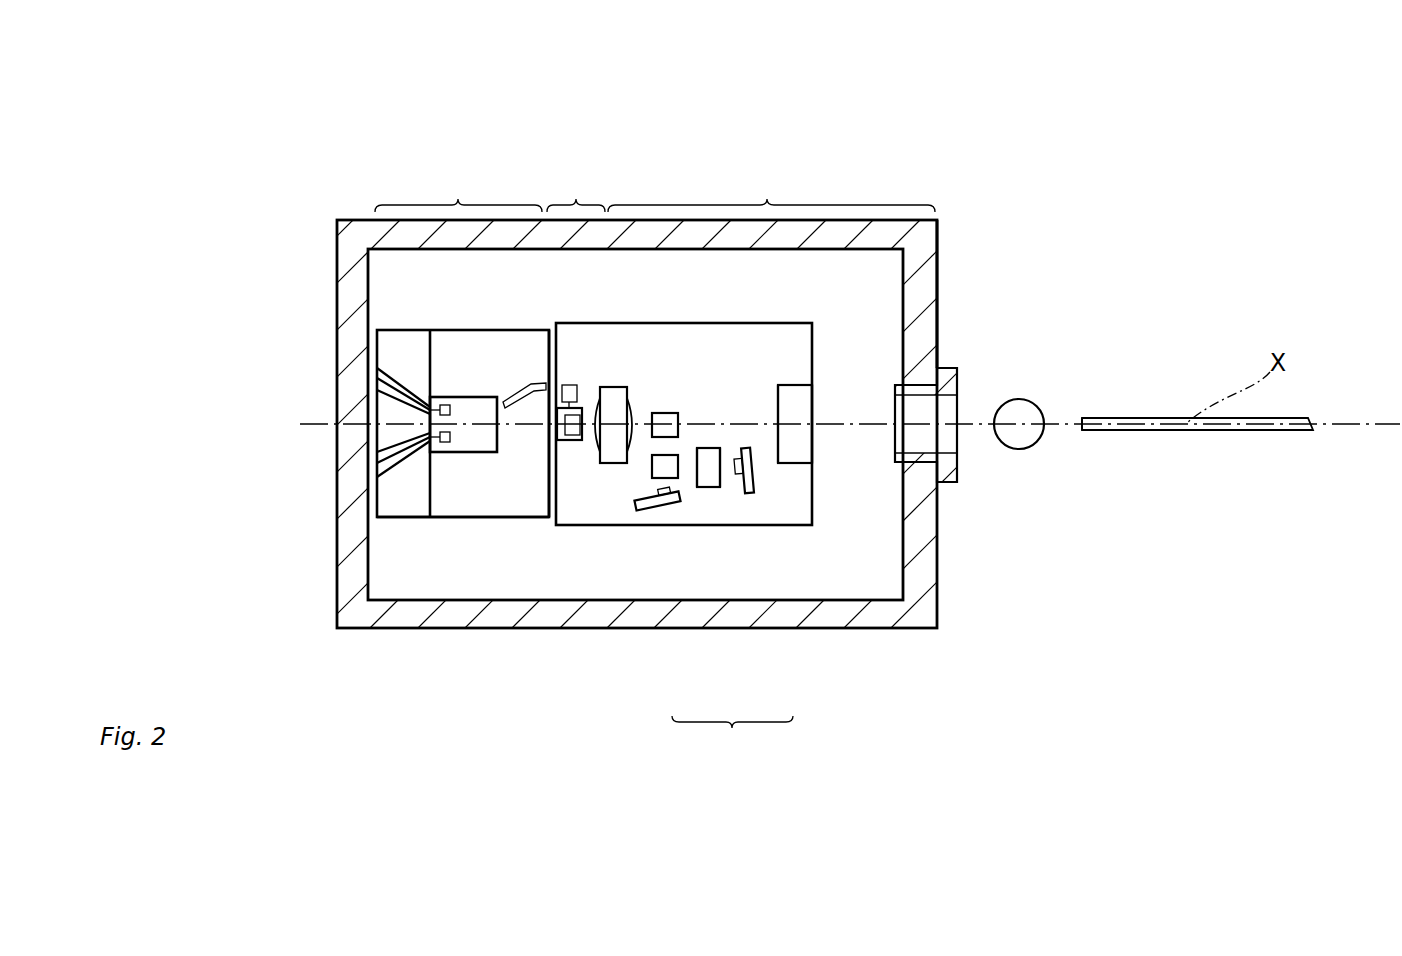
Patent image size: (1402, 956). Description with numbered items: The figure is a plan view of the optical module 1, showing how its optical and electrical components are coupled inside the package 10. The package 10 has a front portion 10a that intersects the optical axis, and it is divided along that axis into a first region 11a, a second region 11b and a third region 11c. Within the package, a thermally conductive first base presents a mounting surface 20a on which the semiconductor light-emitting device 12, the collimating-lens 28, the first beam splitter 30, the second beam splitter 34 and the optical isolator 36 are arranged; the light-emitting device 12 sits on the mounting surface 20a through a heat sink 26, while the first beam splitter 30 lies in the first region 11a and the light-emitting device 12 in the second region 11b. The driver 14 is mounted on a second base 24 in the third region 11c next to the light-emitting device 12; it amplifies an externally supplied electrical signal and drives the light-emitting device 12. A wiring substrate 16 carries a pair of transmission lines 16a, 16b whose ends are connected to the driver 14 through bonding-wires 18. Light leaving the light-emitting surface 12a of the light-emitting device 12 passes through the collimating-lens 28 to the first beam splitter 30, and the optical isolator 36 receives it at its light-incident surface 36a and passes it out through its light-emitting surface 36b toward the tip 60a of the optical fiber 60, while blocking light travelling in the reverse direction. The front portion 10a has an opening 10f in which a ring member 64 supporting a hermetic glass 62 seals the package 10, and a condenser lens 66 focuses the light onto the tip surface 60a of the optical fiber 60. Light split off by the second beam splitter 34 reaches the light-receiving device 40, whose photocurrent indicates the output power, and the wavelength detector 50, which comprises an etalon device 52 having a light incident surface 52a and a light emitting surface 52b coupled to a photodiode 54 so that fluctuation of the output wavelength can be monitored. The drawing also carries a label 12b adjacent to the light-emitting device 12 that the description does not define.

The optical module 1 is at (1152, 116).
The package 10 is at (348, 263).
The front portion 10a is at (940, 267).
The opening 10f is at (938, 445).
The first region 11a is at (771, 190).
The second region 11b is at (576, 190).
The third region 11c is at (458, 190).
The semiconductor light-emitting device 12 is at (564, 446).
The light-emitting surface 12a is at (588, 410).
The lead 12b is at (550, 422).
The driver 14 is at (472, 398).
The wiring substrate 16 is at (393, 497).
The transmission line 16a is at (381, 377).
The transmission line 16b is at (378, 472).
The bonding-wires 18 is at (446, 451).
The mounting surface 20a is at (794, 525).
The second base 24 is at (443, 502).
The heat sink 26 is at (550, 461).
The collimating-lens 28 is at (606, 464).
The first beam splitter 30 is at (665, 413).
The second beam splitter 34 is at (655, 478).
The optical isolator 36 is at (798, 464).
The light-incident surface 36a is at (778, 410).
The light-emitting surface 36b is at (813, 407).
The semiconductor light-receiving device 40 is at (660, 511).
The wavelength detector 50 is at (732, 736).
The etalon device 52 is at (705, 488).
The light incident surface 52a is at (699, 448).
The light emitting surface 52b is at (716, 488).
The photodiode 54 is at (750, 494).
The optical fiber 60 is at (1277, 432).
The tip 60a is at (1078, 432).
The hermetic glass 62 is at (917, 400).
The ring member 64 is at (942, 367).
The condenser lens 66 is at (1016, 440).